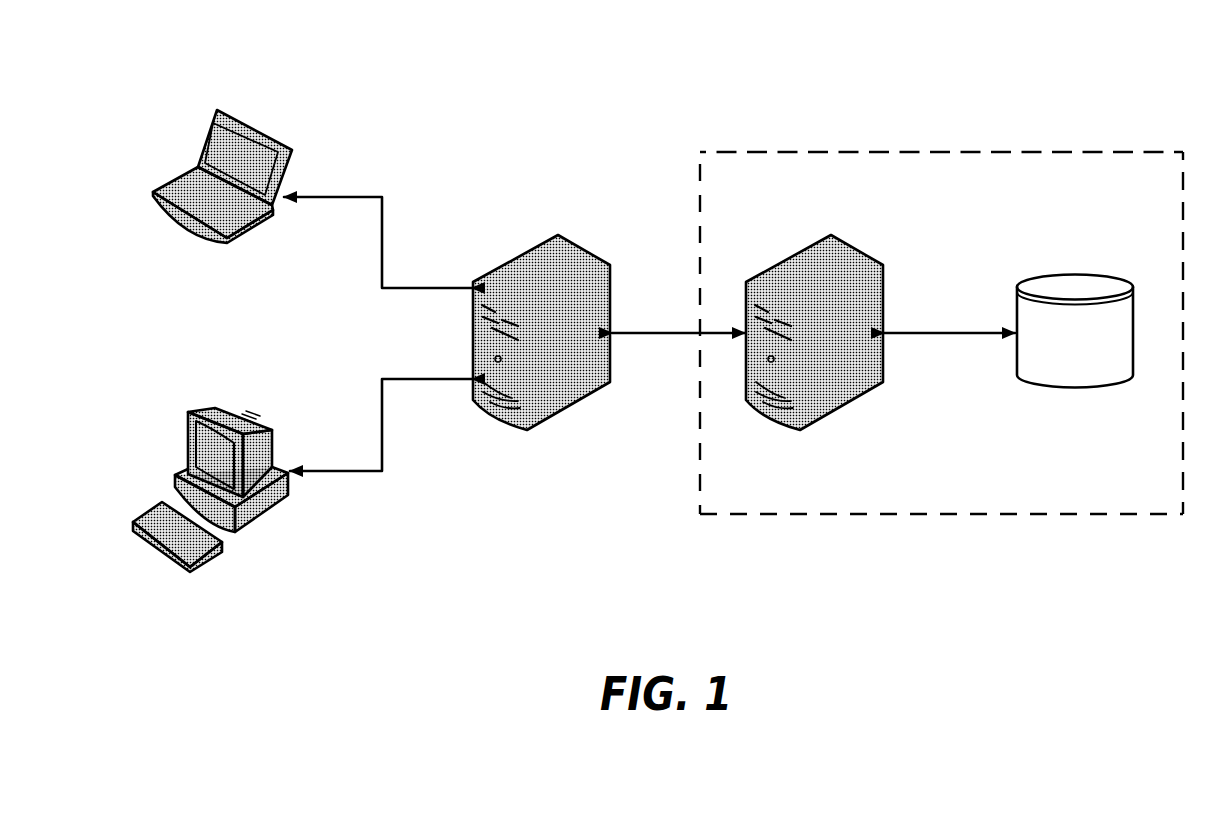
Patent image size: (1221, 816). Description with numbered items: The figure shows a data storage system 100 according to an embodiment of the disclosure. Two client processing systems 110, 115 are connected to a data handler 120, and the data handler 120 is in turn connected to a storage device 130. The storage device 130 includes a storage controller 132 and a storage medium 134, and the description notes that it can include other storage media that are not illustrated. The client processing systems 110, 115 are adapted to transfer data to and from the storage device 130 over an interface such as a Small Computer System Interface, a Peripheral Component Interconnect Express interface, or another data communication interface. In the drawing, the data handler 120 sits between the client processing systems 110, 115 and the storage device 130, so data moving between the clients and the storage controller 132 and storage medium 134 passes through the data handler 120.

The data storage system 100 is at (420, 640).
The client processing system 110 is at (214, 117).
The client processing system 115 is at (203, 410).
The data handler 120 is at (509, 266).
The storage device 130 is at (1165, 504).
The storage controller 132 is at (784, 266).
The storage medium 134 is at (1043, 278).